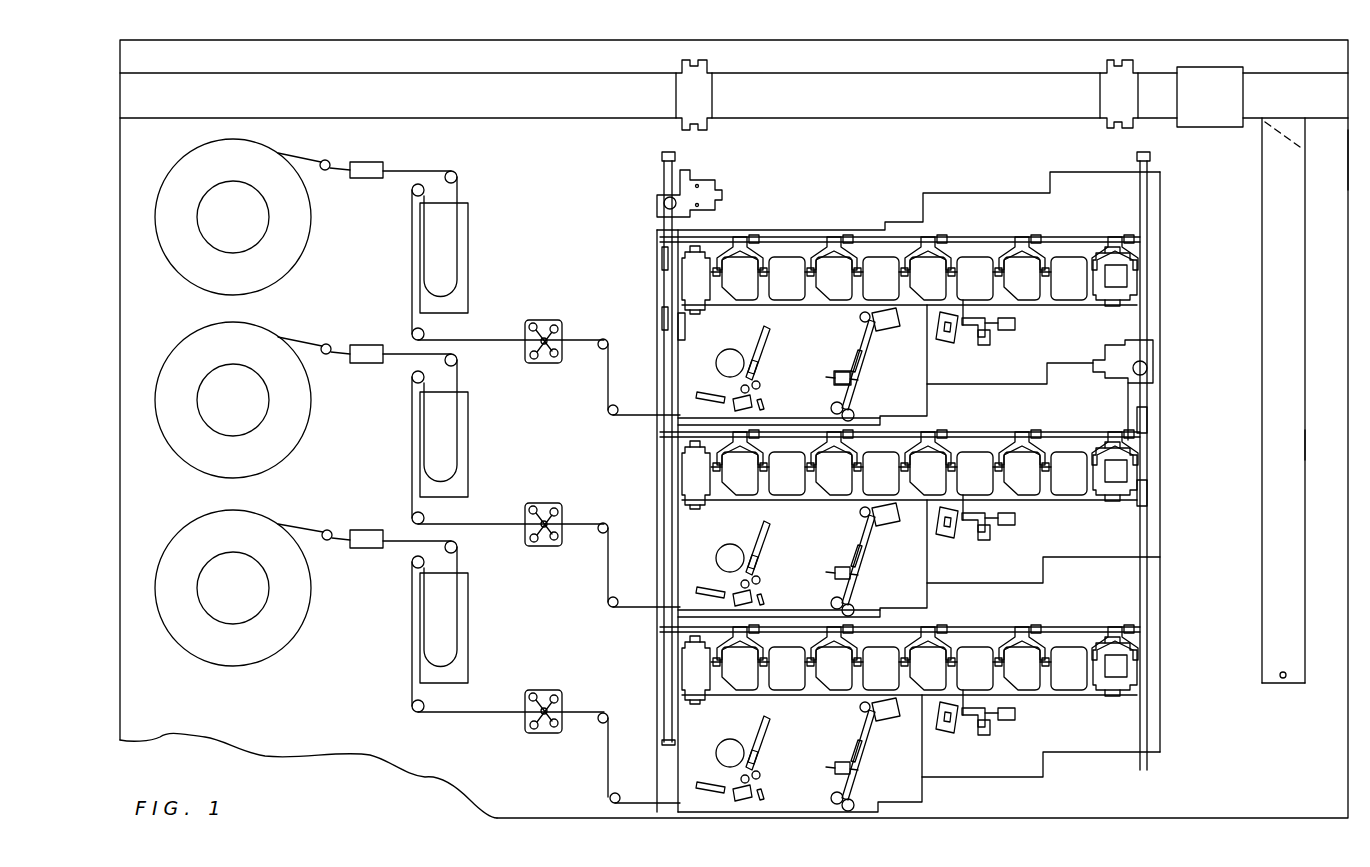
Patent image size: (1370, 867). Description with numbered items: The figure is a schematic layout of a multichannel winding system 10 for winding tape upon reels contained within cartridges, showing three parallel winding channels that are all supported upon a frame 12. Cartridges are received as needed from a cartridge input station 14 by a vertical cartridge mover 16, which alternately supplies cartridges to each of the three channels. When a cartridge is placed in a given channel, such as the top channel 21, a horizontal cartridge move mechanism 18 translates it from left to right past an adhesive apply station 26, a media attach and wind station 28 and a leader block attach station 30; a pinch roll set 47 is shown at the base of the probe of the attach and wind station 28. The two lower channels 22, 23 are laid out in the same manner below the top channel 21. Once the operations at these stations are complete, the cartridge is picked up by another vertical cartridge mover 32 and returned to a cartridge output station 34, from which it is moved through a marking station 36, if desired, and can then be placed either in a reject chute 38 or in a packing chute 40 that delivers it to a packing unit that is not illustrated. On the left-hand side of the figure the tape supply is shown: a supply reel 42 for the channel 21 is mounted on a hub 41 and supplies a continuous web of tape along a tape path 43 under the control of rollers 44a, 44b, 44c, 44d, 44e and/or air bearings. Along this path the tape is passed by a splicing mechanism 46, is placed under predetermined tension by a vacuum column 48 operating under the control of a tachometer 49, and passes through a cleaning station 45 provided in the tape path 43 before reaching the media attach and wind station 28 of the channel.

The multichannel winding system 10 is at (1356, 140).
The frame 12 is at (1323, 445).
The cartridge input station 14 is at (712, 93).
The vertical cartridge mover 16 is at (652, 275).
The horizontal cartridge move mechanism 18 is at (900, 230).
The top channel 21 is at (768, 236).
The bobbin holder 22 is at (788, 448).
The bobbin holder 23 is at (779, 662).
The adhesive apply station 26 is at (740, 362).
The media attach and wind station 28 is at (858, 345).
The leader block attach station 30 is at (992, 337).
The vertical cartridge mover 32 is at (1148, 213).
The cartridge output station 34 is at (1100, 93).
The marking station 36 is at (1210, 97).
The reject chute 38 is at (1273, 157).
The packing chute 40 is at (1327, 65).
The hub 41 is at (231, 252).
The supply reel 42 is at (262, 275).
The tape path 43 is at (480, 340).
The roller 44a is at (325, 160).
The roller 44b is at (456, 172).
The roller 44c is at (412, 334).
The roller 44d is at (603, 339).
The roller 44e is at (608, 411).
The cleaning station 45 is at (530, 322).
The splicing mechanism 46 is at (370, 162).
The pinch roll set 47 is at (852, 407).
The vacuum column 48 is at (468, 248).
The tachometer 49 is at (412, 192).